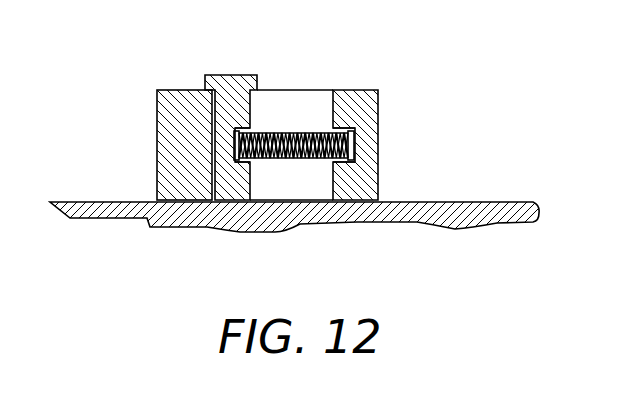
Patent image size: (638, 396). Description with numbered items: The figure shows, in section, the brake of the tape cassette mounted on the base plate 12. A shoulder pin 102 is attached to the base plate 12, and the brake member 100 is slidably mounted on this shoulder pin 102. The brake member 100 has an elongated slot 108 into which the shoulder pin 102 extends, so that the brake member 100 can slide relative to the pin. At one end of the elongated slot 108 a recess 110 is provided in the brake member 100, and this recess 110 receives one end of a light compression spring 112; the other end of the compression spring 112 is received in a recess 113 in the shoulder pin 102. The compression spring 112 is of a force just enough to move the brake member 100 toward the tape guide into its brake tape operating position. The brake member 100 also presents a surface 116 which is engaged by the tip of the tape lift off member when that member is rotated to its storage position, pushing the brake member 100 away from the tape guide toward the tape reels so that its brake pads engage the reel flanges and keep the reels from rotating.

The base plate 12 is at (467, 228).
The brake member 100 is at (157, 155).
The shoulder pin 102 is at (233, 75).
The elongated slot 108 is at (315, 103).
The recess 110 is at (350, 163).
The compression spring 112 is at (287, 132).
The recess 113 is at (250, 163).
The surface 116 is at (378, 122).